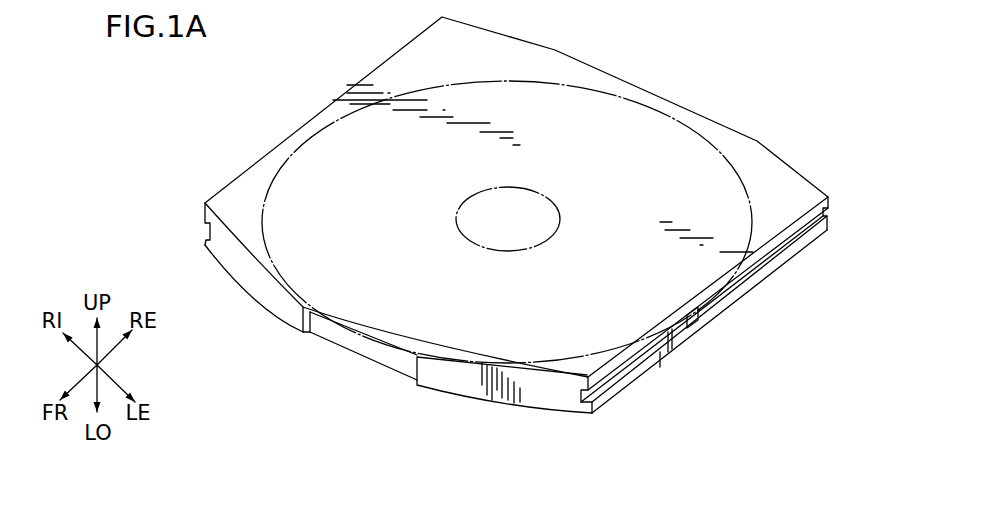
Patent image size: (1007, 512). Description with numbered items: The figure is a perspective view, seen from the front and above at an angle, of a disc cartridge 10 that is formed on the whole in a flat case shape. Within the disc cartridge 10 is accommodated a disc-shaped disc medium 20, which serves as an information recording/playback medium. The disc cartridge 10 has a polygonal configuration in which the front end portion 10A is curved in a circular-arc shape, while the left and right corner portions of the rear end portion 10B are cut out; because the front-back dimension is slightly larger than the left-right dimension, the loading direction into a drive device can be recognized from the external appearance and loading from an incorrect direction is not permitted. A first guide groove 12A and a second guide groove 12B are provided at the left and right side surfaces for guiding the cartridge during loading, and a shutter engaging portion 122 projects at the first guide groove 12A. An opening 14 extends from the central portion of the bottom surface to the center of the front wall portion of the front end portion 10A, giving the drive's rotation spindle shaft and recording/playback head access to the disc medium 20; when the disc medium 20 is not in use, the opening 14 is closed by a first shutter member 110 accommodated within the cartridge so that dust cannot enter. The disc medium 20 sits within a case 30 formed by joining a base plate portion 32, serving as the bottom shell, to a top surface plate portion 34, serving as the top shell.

The disc cartridge 10 is at (692, 58).
The front end portion 10A is at (470, 400).
The rear end portion 10B is at (757, 142).
The first guide groove 12A is at (580, 393).
The second guide groove 12B is at (207, 227).
The opening 14 is at (413, 378).
The disc medium 20 is at (540, 103).
The case 30 is at (675, 423).
The base plate portion 32 is at (693, 336).
The top surface plate portion 34 is at (262, 297).
The first shutter member 110 is at (332, 333).
The shutter engaging portion 122 is at (700, 313).